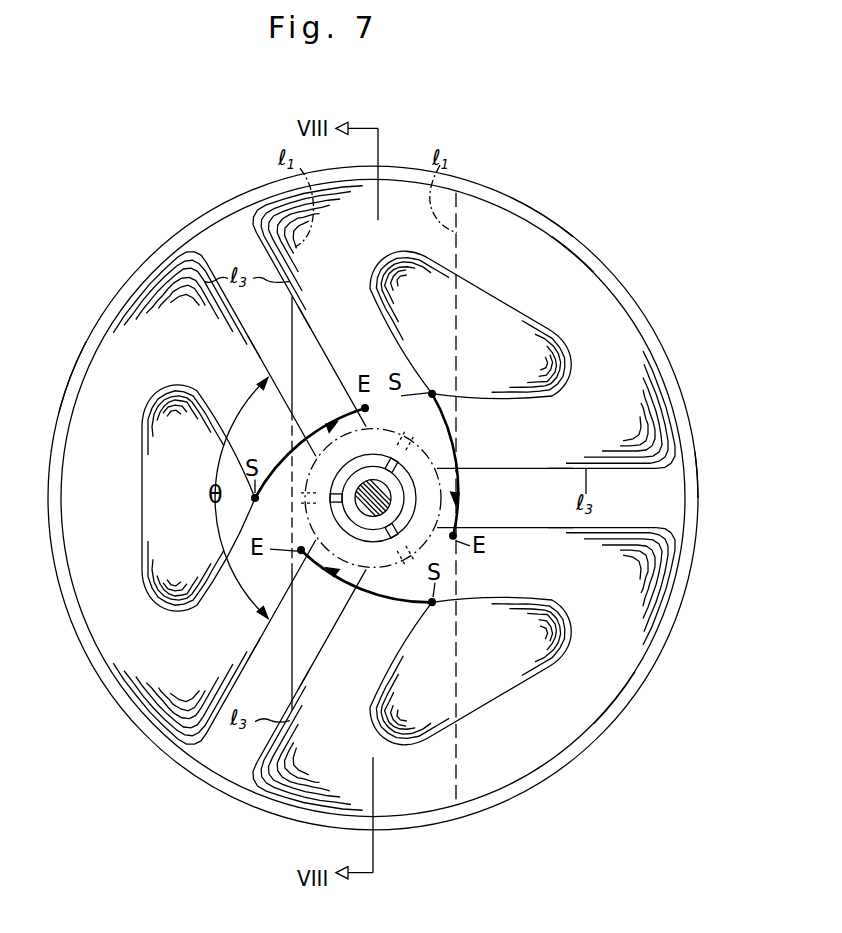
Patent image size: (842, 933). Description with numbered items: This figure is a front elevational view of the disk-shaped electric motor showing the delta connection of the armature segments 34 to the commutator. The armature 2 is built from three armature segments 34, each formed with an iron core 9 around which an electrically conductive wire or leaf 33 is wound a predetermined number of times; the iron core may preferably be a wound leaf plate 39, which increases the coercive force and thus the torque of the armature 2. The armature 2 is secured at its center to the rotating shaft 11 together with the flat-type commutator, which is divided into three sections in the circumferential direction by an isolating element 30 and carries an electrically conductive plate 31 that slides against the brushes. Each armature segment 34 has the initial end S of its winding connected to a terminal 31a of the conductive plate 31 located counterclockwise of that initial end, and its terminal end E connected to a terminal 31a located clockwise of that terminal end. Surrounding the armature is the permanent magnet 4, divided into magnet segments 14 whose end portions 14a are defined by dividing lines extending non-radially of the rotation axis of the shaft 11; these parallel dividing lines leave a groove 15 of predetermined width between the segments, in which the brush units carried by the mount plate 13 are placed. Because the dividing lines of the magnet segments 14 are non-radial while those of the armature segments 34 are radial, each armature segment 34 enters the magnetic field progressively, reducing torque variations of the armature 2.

The armature 2 is at (373, 479).
The permanent magnet 4 is at (717, 469).
The iron core 9 is at (337, 503).
The rotating shaft 11 is at (357, 512).
The mount plate 13 is at (592, 232).
The permanent magnet segment 14 is at (404, 495).
The end portion 14a is at (375, 530).
The groove 15 is at (275, 353).
The isolating element 30 is at (410, 497).
The electrically conductive plate 31 is at (399, 504).
The terminal 31a is at (397, 508).
The electrically conductive wire or leaf 33 is at (419, 512).
The armature segment 34 is at (361, 450).
The wound leaf plate 39 is at (393, 501).